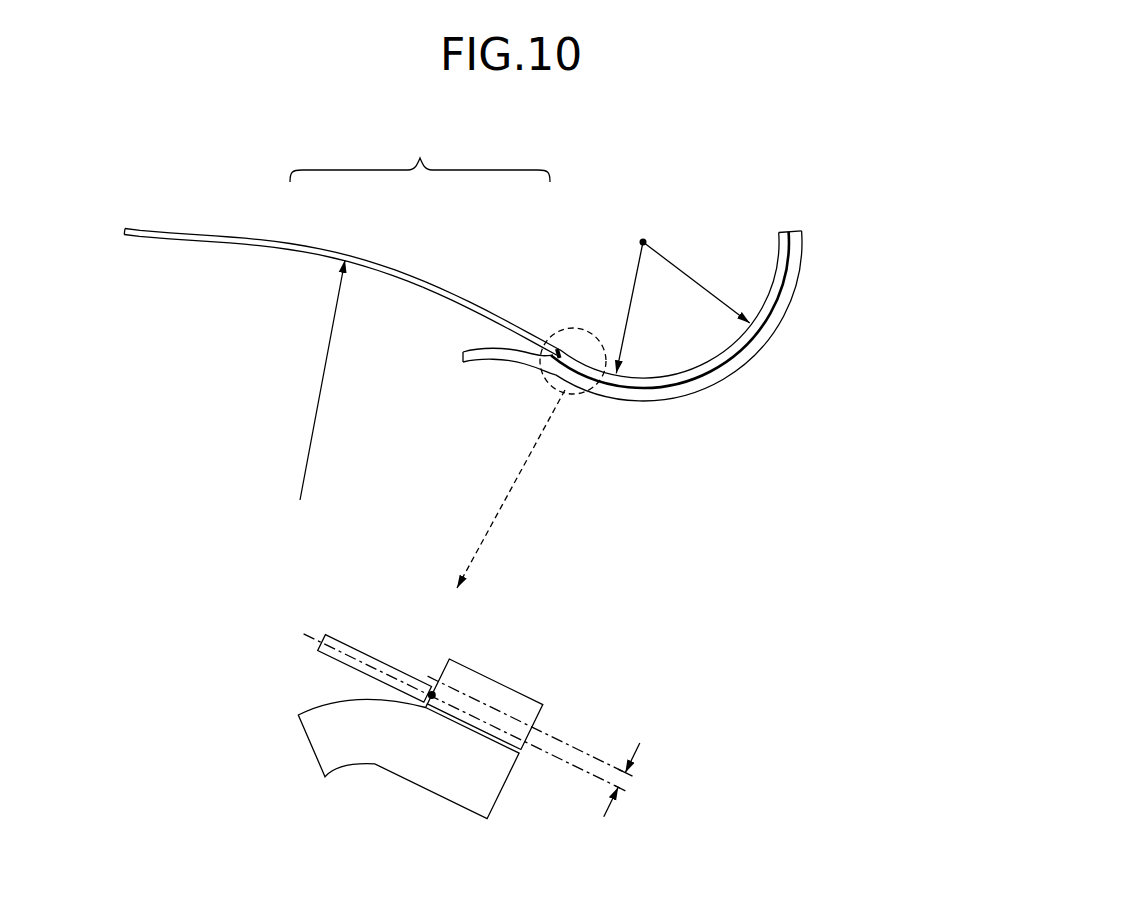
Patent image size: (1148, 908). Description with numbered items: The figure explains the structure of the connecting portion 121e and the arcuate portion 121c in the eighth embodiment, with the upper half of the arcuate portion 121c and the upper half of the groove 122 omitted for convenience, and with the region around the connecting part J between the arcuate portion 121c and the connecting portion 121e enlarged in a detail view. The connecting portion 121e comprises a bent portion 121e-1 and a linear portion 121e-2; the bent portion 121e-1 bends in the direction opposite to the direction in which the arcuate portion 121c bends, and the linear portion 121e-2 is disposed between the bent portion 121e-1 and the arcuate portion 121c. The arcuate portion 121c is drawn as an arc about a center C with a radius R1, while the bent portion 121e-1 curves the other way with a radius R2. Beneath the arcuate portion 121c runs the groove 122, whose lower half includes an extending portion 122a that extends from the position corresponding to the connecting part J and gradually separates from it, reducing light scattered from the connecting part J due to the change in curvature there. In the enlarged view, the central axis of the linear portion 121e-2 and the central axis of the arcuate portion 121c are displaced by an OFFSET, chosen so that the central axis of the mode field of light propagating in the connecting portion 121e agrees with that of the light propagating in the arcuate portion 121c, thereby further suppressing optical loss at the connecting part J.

The connecting portion 121e is at (372, 460).
The bent portion 121e-1 is at (328, 248).
The linear portion 121e-2 is at (510, 330).
The arcuate portion 121c is at (779, 247).
The groove 122 is at (800, 288).
The extending portion 122a is at (495, 364).
The center of curvature C is at (643, 240).
The radius of curvature of curved portion R1 is at (673, 307).
The radius of curvature of sheet member R2 is at (316, 380).
The connecting part J is at (557, 350).
The offset between center lines OFFSET is at (622, 780).